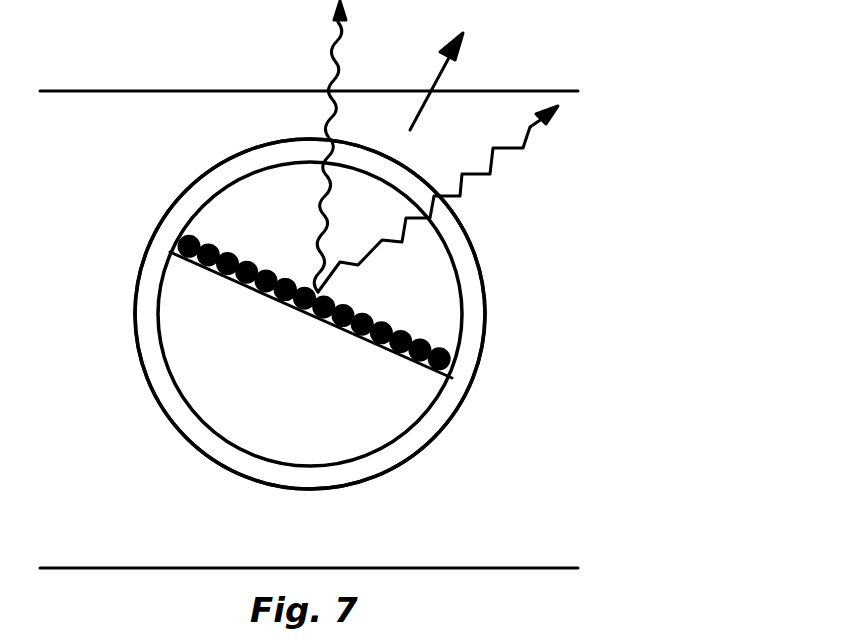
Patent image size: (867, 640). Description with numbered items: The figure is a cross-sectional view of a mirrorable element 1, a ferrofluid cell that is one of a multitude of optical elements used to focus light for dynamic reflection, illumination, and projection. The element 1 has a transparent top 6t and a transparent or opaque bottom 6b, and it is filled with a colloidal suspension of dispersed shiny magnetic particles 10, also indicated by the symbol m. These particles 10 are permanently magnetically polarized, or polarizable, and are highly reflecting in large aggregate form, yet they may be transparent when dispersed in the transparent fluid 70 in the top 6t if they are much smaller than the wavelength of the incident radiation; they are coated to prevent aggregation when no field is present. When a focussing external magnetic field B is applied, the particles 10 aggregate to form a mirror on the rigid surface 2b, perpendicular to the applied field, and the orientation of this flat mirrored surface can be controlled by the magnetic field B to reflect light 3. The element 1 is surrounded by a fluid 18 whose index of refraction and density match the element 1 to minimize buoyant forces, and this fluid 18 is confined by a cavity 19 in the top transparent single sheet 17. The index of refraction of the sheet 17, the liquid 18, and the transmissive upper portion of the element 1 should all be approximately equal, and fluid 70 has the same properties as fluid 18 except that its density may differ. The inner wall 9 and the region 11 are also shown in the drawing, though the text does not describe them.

The top transparent single sheet 17 is at (122, 140).
The light 3 is at (337, 36).
The external magnetic field B is at (461, 73).
The transparent fluid 70 is at (408, 263).
The fluid surrounding element 18 is at (472, 304).
The cavity 19 is at (480, 370).
The inner tube wall 9 is at (262, 430).
The transparent top 6t is at (268, 192).
The bottom 6b is at (215, 375).
The rigid surface 2b is at (268, 296).
The magnetic particles 10 is at (275, 277).
The magnetic particles symbol m is at (303, 332).
The mirrorable element 1 is at (300, 410).
The surrounding medium 11 is at (143, 486).